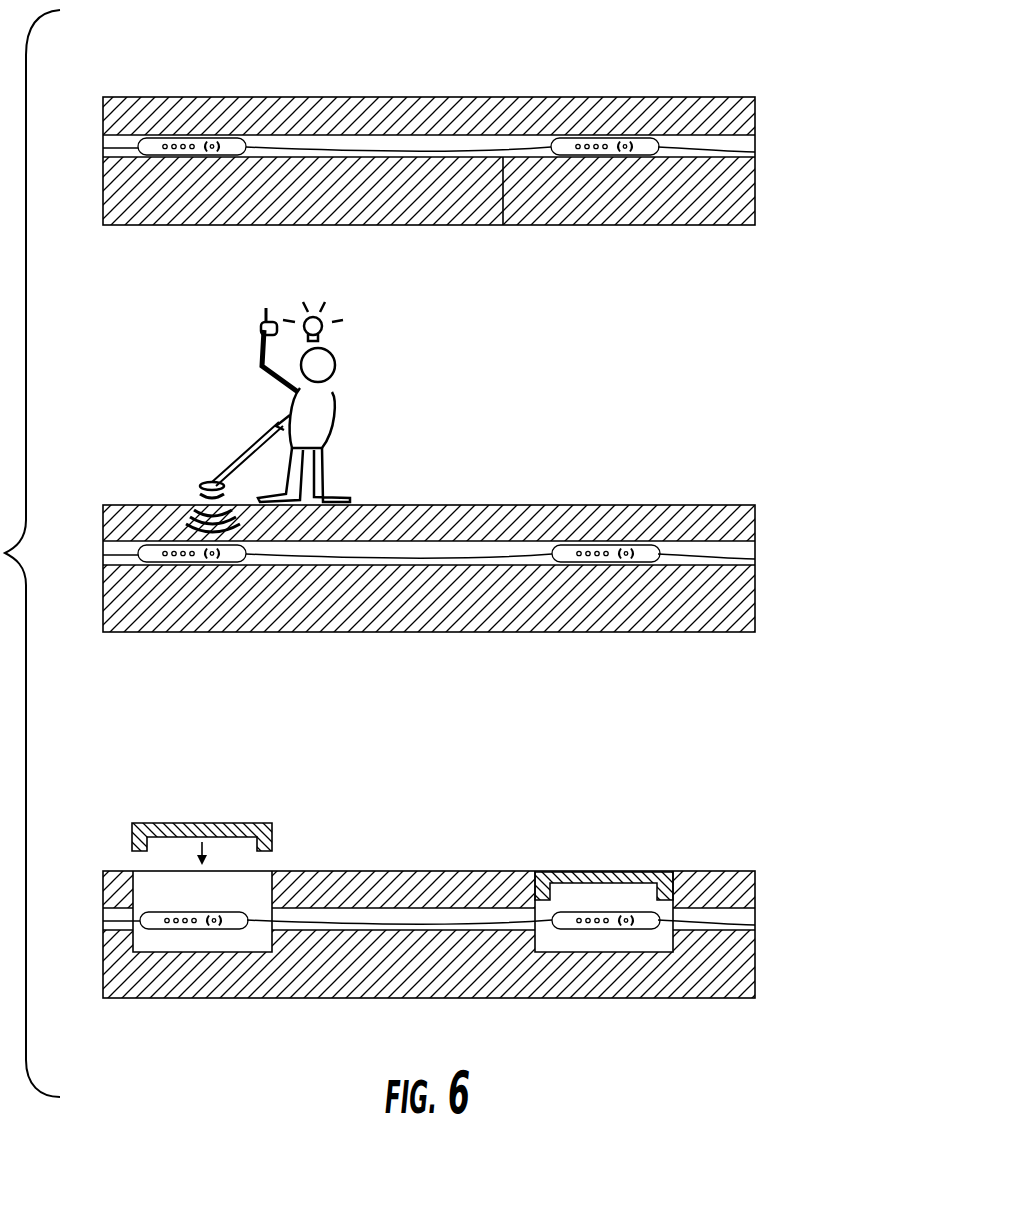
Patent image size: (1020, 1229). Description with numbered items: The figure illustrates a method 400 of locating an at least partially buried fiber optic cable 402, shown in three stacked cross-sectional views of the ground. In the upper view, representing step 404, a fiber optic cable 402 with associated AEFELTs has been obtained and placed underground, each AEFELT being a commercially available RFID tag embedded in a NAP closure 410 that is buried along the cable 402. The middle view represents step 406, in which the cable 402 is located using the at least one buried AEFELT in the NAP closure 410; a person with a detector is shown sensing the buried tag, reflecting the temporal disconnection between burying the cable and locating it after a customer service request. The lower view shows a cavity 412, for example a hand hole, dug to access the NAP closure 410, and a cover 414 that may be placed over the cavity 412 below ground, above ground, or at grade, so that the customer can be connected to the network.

The method of locating an at least partially buried fiber optic cable 400 is at (282, 1030).
The fiber optic cable 402 is at (503, 225).
The step of obtaining and burying the cable with an AEFELT 404 is at (786, 114).
The step of locating the cable using the buried AEFELT 406 is at (788, 535).
The NAP closure 410 is at (196, 154).
The cavity 412 is at (262, 905).
The cover 414 is at (274, 828).